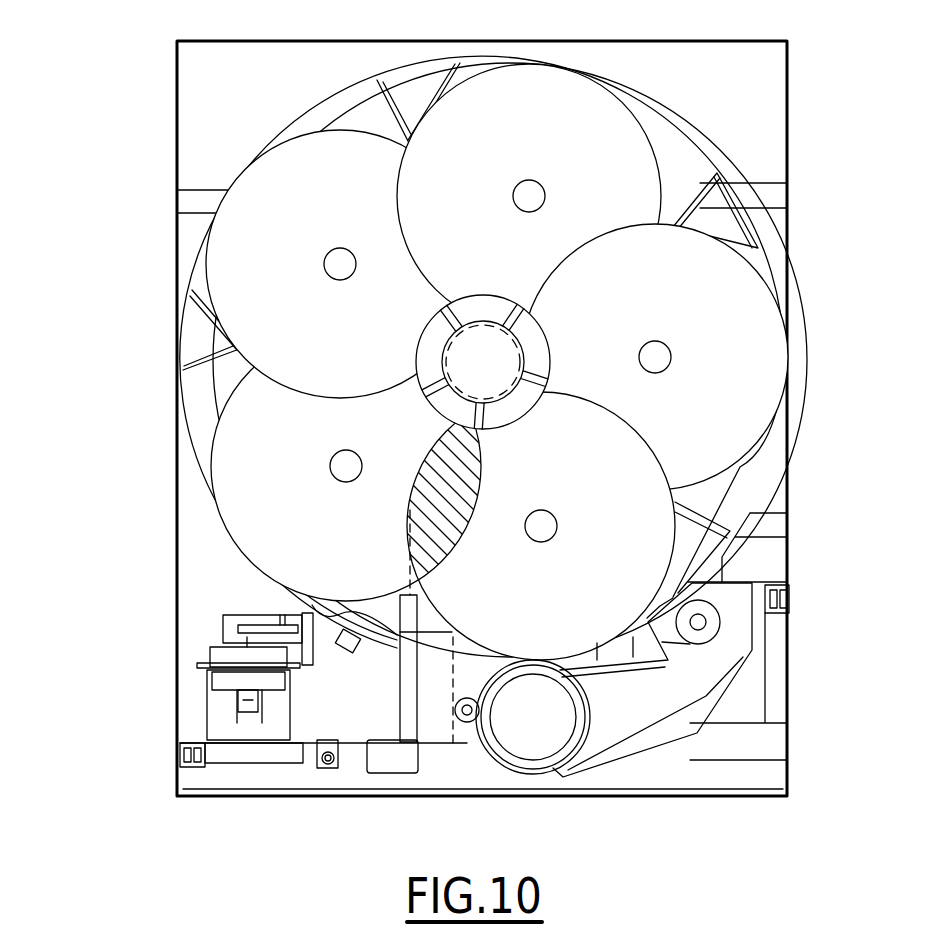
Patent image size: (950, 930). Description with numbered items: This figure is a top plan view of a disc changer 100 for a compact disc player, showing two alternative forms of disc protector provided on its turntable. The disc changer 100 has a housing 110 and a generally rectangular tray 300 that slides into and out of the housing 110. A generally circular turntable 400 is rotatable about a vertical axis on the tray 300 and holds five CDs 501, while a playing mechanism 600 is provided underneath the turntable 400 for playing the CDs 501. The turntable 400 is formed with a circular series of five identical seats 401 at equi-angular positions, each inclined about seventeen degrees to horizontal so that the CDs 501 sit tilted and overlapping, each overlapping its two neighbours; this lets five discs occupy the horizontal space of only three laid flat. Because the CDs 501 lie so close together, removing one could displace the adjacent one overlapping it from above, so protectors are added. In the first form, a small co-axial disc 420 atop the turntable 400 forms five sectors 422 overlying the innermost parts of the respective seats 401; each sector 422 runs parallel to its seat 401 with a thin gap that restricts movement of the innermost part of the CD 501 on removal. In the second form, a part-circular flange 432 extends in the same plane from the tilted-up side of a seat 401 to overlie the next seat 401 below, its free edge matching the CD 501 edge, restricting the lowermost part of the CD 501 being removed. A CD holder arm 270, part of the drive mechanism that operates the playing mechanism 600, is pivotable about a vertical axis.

The disc changer 100 is at (140, 135).
The housing 110 is at (790, 119).
The CD holder arm 270 is at (680, 762).
The tray 300 is at (790, 47).
The turntable 400 is at (764, 250).
The seat 401 is at (670, 188).
The co-axial disc 420 is at (546, 321).
The sector 422 is at (546, 346).
The part-circular flange 432 is at (462, 542).
The CD 501 is at (603, 103).
The playing mechanism 600 is at (452, 733).